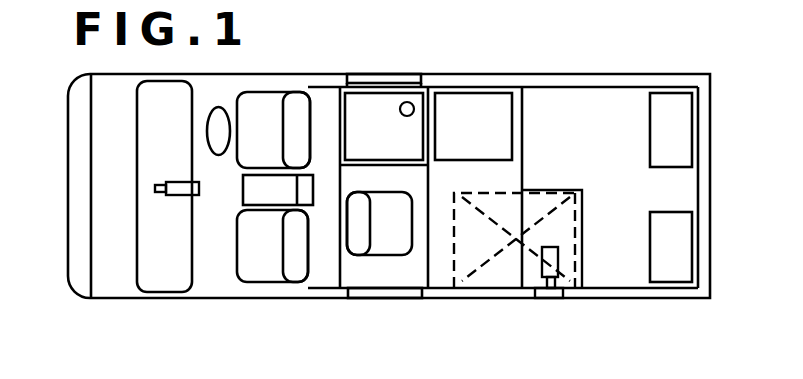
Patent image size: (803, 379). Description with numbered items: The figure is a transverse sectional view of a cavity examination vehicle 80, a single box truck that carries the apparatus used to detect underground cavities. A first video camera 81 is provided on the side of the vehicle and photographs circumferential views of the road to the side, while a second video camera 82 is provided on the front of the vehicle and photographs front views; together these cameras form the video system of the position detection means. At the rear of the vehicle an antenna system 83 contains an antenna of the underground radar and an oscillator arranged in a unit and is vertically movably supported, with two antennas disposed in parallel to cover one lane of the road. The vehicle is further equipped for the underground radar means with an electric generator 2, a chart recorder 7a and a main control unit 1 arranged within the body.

The main control unit 1 is at (477, 102).
The electric generator 2 is at (531, 275).
The chart recorder 7a is at (391, 103).
The vehicle 80 is at (328, 74).
The first video camera 81 is at (555, 268).
The second video camera 82 is at (183, 194).
The antenna system 83 is at (677, 135).